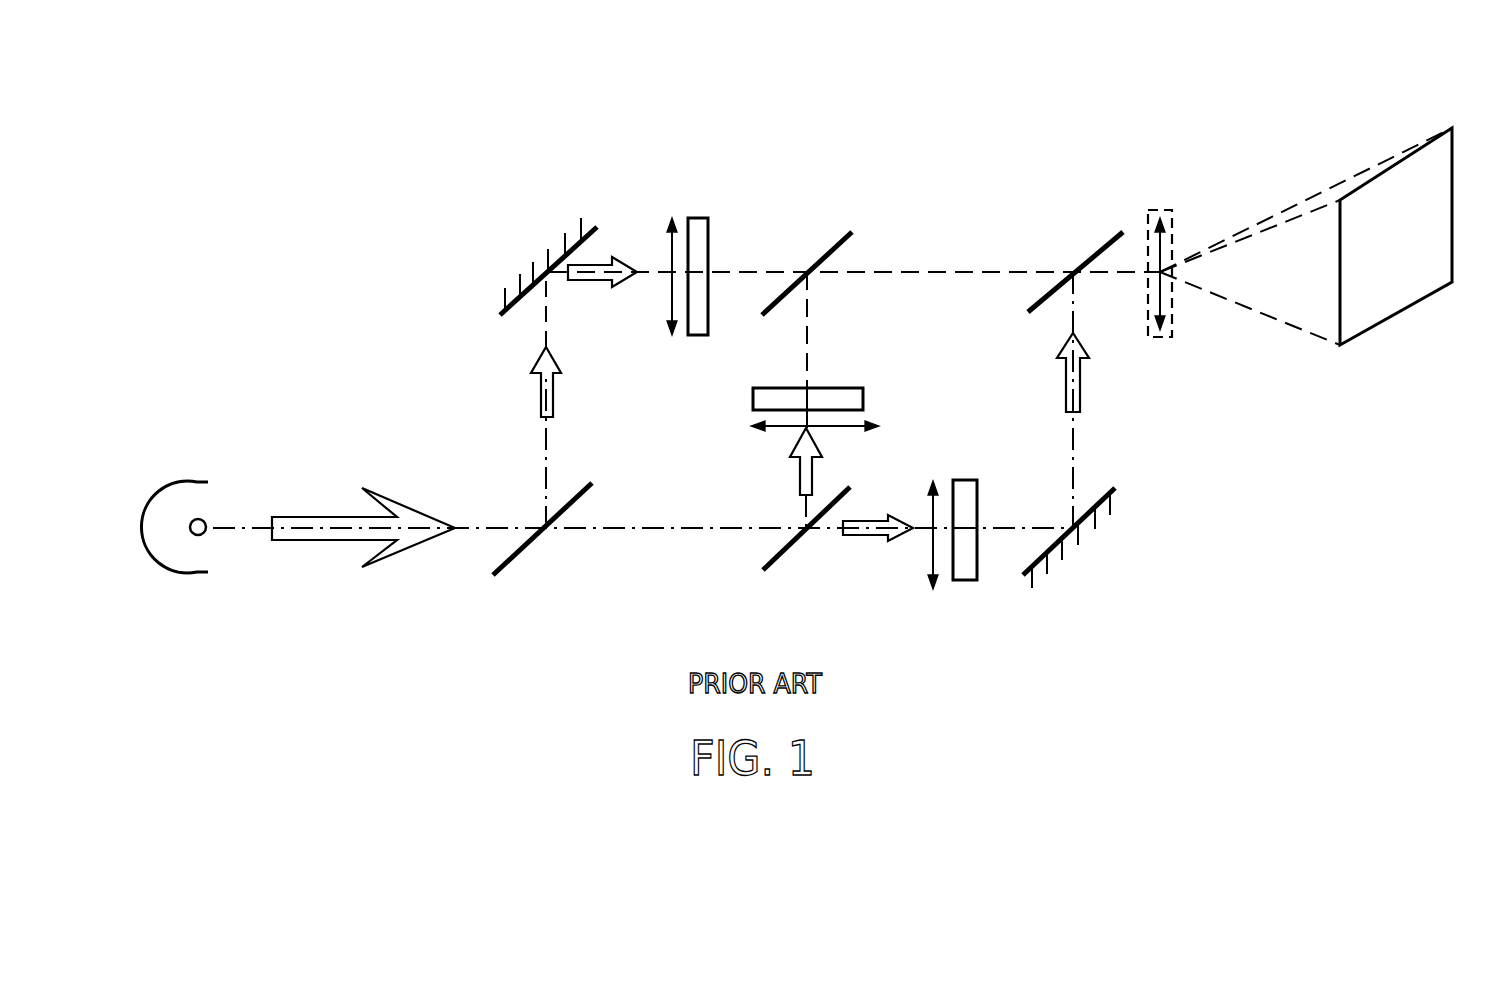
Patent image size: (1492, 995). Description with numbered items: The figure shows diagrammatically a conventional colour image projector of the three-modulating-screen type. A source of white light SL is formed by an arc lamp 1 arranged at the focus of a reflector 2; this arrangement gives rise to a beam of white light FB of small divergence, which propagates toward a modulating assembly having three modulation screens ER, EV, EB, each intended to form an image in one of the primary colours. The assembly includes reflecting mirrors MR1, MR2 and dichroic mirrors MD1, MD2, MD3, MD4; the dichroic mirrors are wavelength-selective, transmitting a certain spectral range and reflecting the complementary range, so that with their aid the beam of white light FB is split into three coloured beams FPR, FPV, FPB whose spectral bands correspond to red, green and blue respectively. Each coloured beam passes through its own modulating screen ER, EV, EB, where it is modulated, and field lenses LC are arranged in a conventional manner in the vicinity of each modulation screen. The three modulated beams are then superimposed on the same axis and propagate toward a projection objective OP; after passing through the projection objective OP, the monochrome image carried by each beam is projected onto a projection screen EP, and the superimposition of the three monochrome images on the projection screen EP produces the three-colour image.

The arc lamp 1 is at (192, 520).
The reflector 2 is at (160, 556).
The source of white light SL is at (159, 553).
The beam of white light FB is at (293, 517).
The dichroic mirror MD1 is at (526, 550).
The dichroic mirror MD2 is at (788, 552).
The dichroic mirror MD3 is at (1082, 262).
The dichroic mirror MD4 is at (830, 250).
The reflecting mirror MR1 is at (498, 310).
The reflecting mirror MR2 is at (1103, 497).
The red coloured beam FPR is at (541, 393).
The green coloured beam FPV is at (800, 470).
The blue coloured beam FPB is at (870, 537).
The field lens LC is at (672, 220).
The modulating screen ER is at (700, 218).
The modulating screen EV is at (753, 398).
The modulating screen EB is at (965, 580).
The projection objective OP is at (1165, 210).
The projection screen EP is at (1452, 155).